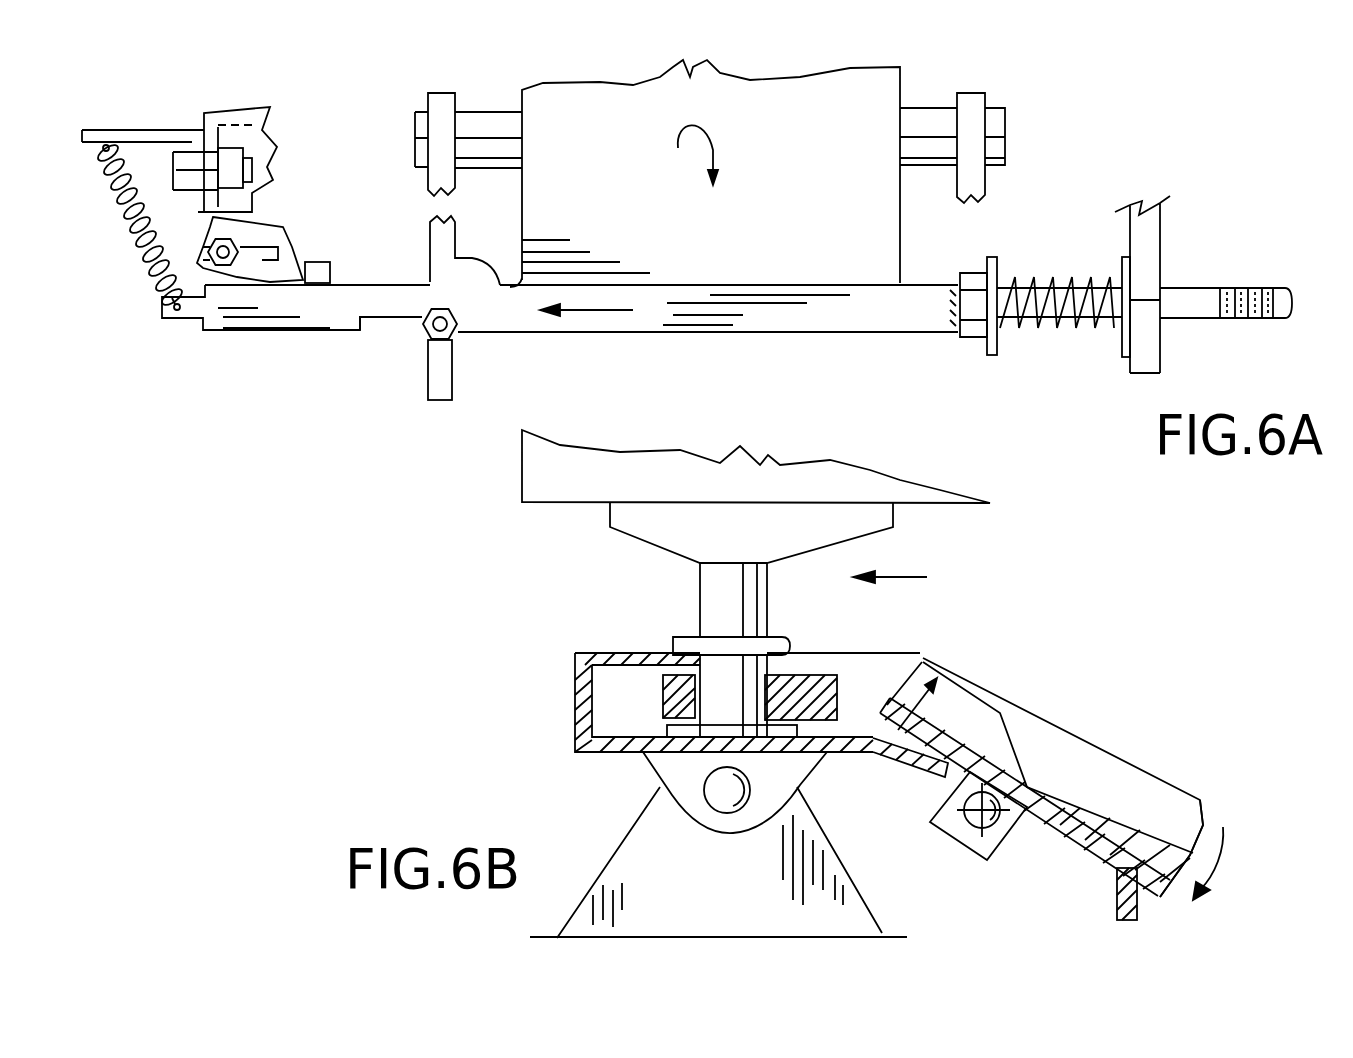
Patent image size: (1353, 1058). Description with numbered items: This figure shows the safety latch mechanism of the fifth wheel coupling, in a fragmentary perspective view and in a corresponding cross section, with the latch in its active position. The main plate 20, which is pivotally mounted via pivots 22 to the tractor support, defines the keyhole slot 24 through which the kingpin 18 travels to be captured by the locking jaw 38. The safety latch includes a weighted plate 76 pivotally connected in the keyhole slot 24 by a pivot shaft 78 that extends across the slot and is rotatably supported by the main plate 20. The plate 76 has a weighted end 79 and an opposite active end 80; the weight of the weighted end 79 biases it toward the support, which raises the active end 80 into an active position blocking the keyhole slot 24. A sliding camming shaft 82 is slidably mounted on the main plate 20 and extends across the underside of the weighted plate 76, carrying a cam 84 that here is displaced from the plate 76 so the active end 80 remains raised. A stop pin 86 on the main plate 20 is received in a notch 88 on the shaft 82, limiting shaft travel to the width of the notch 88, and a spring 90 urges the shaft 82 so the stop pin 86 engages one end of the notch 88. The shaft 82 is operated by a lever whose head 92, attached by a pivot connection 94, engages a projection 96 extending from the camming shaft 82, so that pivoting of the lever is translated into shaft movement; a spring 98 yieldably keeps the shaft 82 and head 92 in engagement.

In FIG. 6B, the kingpin 18 is at (713, 615).
In FIG. 6B, the main plate 20 is at (667, 765).
In FIG. 6B, the pivots 22 is at (723, 793).
In FIG. 6B, the keyhole slot 24 is at (857, 717).
In FIG. 6B, the locking jaw 38 is at (807, 693).
In FIG. 6A, the weighted plate 76 is at (838, 220).
In FIG. 6B, the weighted plate 76 is at (1067, 817).
In FIG. 6B, the pivot shaft 78 is at (1000, 822).
In FIG. 6B, the weighted end 79 is at (1197, 807).
In FIG. 6B, the active end 80 is at (893, 700).
In FIG. 6A, the sliding camming shaft 82 is at (847, 322).
In FIG. 6B, the sliding camming shaft 82 is at (1113, 897).
In FIG. 6A, the cam 84 is at (477, 260).
In FIG. 6A, the stop pin 86 is at (443, 340).
In FIG. 6A, the notch 88 is at (383, 318).
In FIG. 6A, the spring 90 is at (1062, 280).
In FIG. 6A, the head 92 is at (250, 237).
In FIG. 6A, the pivot connection 94 is at (232, 257).
In FIG. 6A, the projection 96 is at (322, 262).
In FIG. 6A, the spring 98 is at (128, 223).